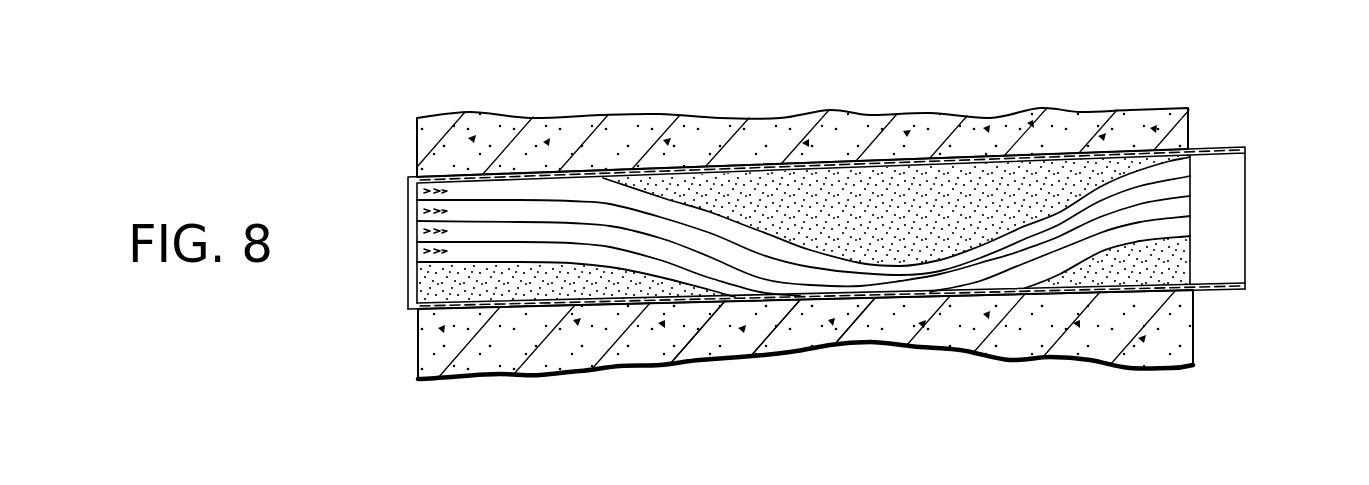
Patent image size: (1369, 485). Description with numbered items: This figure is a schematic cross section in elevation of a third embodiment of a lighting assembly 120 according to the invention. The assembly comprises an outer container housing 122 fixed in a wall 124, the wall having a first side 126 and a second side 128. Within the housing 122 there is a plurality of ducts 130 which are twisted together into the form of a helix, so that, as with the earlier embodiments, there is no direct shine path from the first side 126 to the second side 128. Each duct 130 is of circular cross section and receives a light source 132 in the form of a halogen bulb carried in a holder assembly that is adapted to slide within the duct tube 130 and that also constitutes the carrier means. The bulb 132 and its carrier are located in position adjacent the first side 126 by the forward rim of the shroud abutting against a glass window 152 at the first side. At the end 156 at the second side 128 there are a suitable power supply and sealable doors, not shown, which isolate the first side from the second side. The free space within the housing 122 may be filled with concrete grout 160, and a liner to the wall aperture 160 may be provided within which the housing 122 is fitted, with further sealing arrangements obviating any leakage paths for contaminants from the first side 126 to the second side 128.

The lighting assembly 120 is at (1207, 112).
The outer container housing 122 is at (1157, 292).
The wall 124 is at (800, 350).
The first side 126 is at (420, 347).
The second side 128 is at (1193, 340).
The ducts 130 is at (596, 196).
The light source 132 is at (408, 240).
The glass window 152 is at (406, 283).
The end 156 is at (1216, 150).
The concrete grout 160 is at (833, 203).